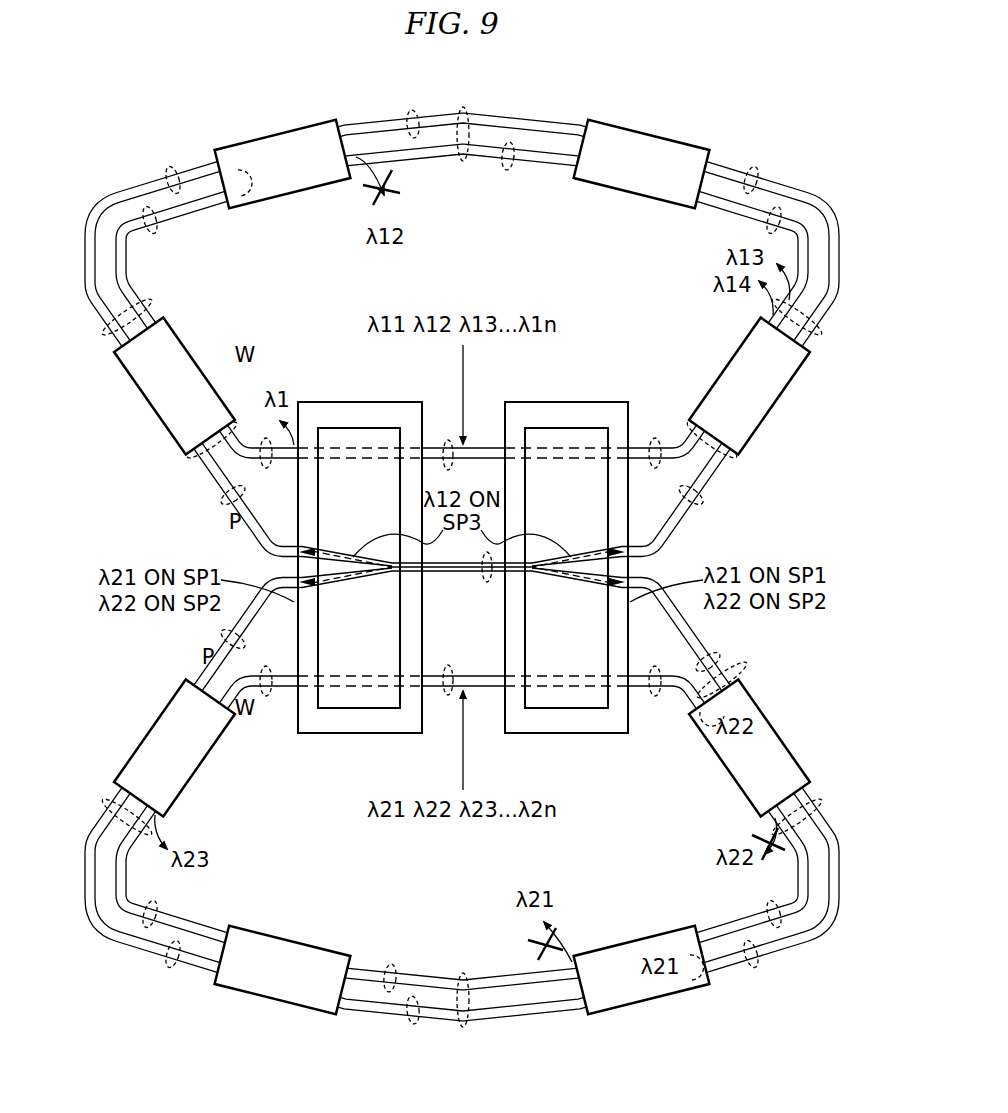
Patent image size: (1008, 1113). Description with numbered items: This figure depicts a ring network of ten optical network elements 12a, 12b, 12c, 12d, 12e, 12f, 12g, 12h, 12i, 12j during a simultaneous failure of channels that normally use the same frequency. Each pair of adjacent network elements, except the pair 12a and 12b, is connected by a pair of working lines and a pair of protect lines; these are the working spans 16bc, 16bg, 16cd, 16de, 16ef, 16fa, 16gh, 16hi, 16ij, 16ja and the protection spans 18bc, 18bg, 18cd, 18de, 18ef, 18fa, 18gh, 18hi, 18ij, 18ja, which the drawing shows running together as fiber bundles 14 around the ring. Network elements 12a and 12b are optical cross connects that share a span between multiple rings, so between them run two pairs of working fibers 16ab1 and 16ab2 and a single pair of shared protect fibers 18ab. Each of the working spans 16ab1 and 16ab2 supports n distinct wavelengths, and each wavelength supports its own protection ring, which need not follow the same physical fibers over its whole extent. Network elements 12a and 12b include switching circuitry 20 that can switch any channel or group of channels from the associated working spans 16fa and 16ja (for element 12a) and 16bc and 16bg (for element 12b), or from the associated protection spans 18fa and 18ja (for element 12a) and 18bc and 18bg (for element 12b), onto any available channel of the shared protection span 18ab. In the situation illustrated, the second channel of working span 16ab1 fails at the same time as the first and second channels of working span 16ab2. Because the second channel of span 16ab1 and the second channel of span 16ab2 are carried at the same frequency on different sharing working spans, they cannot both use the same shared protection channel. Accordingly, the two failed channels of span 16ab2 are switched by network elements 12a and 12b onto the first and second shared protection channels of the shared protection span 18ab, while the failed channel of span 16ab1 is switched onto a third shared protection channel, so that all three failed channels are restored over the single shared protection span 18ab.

The optical network element 12a is at (355, 734).
The optical network element 12b is at (588, 734).
The optical network element 12c is at (777, 394).
The optical network element 12d is at (644, 134).
The optical network element 12e is at (280, 134).
The optical network element 12f is at (147, 400).
The optical network element 12g is at (768, 732).
The optical network element 12h is at (648, 1002).
The optical network element 12i is at (272, 1002).
The optical network element 12j is at (150, 732).
The optical fiber cable 14 is at (463, 107).
The working span 16ab1 is at (446, 440).
The working span 16ab2 is at (444, 706).
The working span 16bc is at (655, 439).
The working span 16bg is at (656, 695).
The working lines 16cd is at (766, 228).
The working lines 16de is at (509, 171).
The working lines 16ef is at (152, 234).
The working span 16fa is at (264, 436).
The working lines 16gh is at (759, 909).
The working lines 16hi is at (388, 964).
The working lines 16ij is at (159, 909).
The working span 16ja is at (266, 698).
The shared protection span 18ab is at (485, 585).
The protection span 18bc is at (705, 492).
The protection span 18bg is at (712, 658).
The protect lines 18cd is at (754, 175).
The protect lines 18de is at (413, 111).
The protect lines 18ef is at (171, 175).
The protection span 18fa is at (231, 502).
The protect lines 18gh is at (754, 965).
The protect lines 18hi is at (413, 1024).
The protect lines 18ij is at (170, 965).
The protection span 18ja is at (226, 654).
The switching circuitry 20 is at (347, 640).